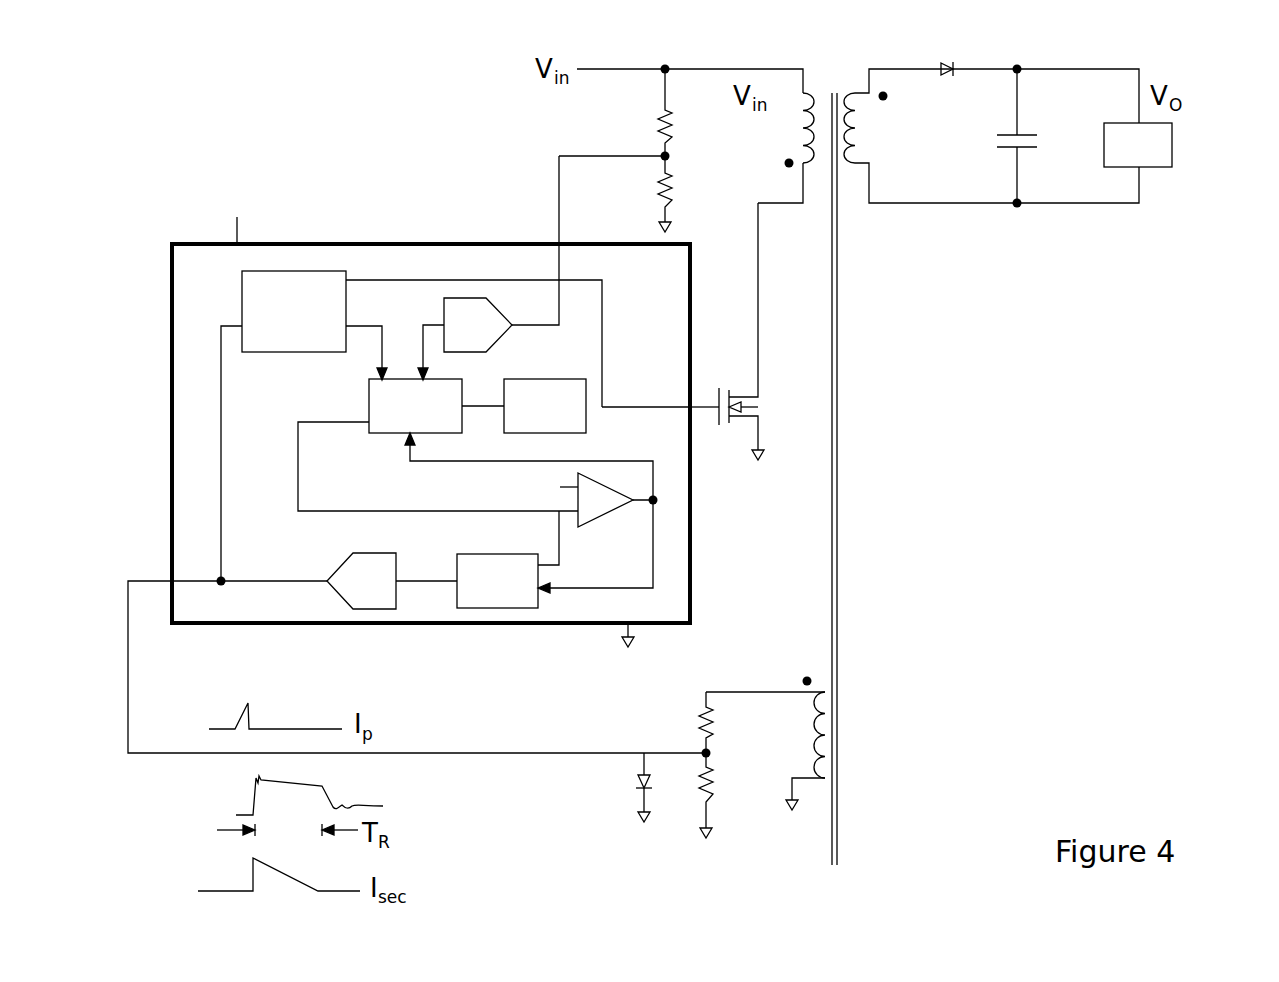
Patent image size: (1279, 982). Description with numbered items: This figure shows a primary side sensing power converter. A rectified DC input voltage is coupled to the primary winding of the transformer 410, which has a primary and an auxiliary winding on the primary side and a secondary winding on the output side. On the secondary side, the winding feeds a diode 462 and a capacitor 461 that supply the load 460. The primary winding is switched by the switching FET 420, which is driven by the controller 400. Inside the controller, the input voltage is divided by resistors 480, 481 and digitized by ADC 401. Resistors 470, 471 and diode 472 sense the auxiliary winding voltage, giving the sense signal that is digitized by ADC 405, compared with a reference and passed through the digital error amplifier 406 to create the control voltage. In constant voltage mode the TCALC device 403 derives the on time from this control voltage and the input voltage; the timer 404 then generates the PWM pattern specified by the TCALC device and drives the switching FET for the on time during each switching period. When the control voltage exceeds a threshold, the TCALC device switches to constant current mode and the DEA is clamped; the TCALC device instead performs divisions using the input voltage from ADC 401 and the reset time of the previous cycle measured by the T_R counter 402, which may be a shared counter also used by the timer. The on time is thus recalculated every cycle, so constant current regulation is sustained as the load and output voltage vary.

The controller 400 is at (480, 242).
The ADC 401 is at (444, 298).
The T_R counter 402 is at (242, 292).
The TCALC device 403 is at (369, 401).
The timer 404 is at (557, 379).
The ADC 405 is at (353, 554).
The Digital Error Amplifier (DEA) 406 is at (461, 554).
The transformer 410 is at (833, 87).
The switching FET 420 is at (765, 402).
The load 460 is at (1180, 148).
The capacitor 461 is at (1010, 156).
The diode 462 is at (977, 58).
The resistor 470 is at (698, 717).
The resistor 471 is at (715, 792).
The diode 472 is at (637, 780).
The resistor 480 is at (681, 130).
The resistor 481 is at (681, 192).